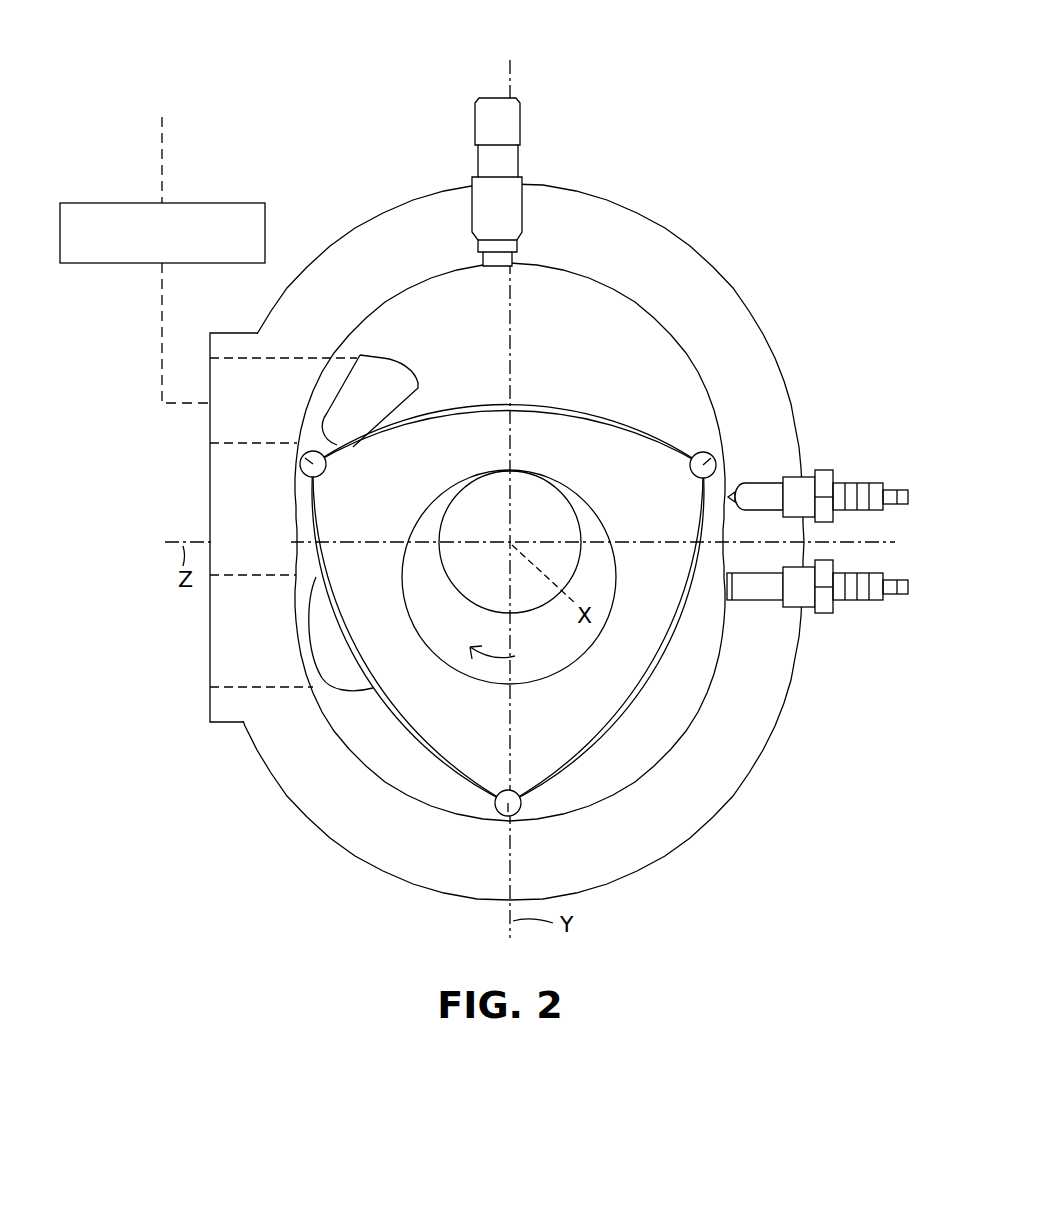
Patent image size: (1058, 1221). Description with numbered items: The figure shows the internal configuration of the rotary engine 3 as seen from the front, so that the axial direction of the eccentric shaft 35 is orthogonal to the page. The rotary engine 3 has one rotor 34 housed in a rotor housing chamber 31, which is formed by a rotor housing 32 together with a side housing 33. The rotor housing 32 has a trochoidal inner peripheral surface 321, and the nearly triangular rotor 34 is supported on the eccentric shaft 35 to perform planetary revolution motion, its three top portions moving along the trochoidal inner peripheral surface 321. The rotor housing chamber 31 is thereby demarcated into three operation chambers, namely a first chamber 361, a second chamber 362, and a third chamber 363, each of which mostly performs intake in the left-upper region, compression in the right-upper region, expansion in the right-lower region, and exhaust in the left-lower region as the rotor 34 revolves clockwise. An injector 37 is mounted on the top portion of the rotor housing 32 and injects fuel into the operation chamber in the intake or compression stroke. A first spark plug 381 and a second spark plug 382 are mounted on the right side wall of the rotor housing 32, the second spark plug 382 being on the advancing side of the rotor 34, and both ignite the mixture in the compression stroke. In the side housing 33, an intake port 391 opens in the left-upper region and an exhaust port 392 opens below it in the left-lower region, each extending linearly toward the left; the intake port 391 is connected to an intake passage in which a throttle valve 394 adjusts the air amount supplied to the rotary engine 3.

The rotary engine 3 is at (777, 121).
The rotor housing chamber 31 is at (697, 377).
The rotor housing 32 is at (726, 278).
The trochoidal inner peripheral surface 321 is at (707, 309).
The side housing 33 is at (568, 297).
The rotor 34 is at (570, 408).
The eccentric shaft 35 is at (566, 505).
The first chamber 361 is at (572, 354).
The second chamber 362 is at (700, 696).
The third chamber 363 is at (425, 776).
The injector 37 is at (518, 102).
The first spark plug 381 is at (873, 483).
The second spark plug 382 is at (873, 573).
The intake port 391 is at (386, 366).
The exhaust port 392 is at (357, 689).
The throttle valve 394 is at (252, 203).